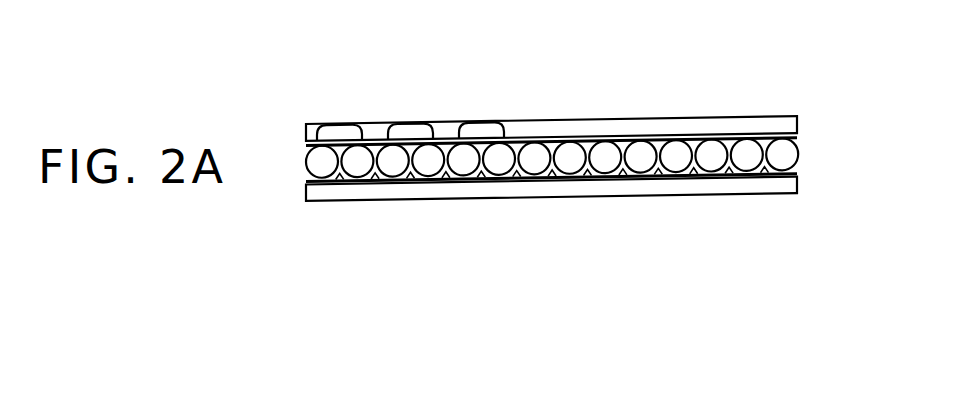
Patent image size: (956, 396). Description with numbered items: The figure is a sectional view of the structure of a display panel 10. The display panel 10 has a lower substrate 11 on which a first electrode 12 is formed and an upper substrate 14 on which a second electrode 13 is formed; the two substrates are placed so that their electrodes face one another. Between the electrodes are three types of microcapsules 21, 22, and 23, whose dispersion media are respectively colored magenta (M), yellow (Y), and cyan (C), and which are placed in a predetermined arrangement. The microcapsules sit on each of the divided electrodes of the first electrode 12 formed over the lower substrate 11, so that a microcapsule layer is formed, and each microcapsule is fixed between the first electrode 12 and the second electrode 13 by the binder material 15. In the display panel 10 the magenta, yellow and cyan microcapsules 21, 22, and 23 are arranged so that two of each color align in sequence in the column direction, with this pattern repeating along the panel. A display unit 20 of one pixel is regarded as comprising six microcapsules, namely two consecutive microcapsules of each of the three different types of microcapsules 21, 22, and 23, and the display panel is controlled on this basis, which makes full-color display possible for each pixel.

The display panel 10 is at (293, 270).
The lower substrate 11 is at (597, 197).
The first electrode 12 is at (690, 183).
The second electrode 13 is at (553, 144).
The upper substrate 14 is at (627, 135).
The binder material 15 is at (692, 146).
The display unit 20 is at (497, 63).
The microcapsule (magenta) 21 is at (346, 124).
The microcapsule (yellow) 22 is at (416, 124).
The microcapsule (cyan) 23 is at (487, 124).